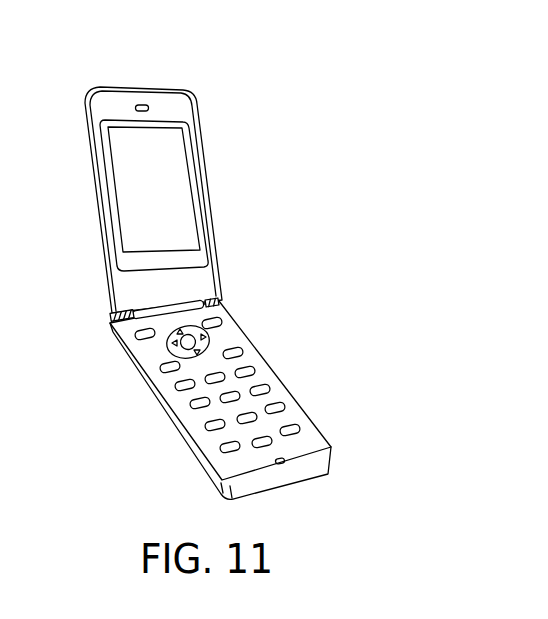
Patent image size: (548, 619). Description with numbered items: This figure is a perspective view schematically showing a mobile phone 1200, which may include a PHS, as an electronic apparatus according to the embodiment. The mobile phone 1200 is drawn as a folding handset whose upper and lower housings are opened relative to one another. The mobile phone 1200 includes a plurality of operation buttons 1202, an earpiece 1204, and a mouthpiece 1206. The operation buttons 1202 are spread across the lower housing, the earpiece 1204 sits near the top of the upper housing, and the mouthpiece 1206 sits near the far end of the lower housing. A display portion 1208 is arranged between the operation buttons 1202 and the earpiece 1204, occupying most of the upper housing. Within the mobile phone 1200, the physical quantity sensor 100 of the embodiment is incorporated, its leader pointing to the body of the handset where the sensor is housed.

The mobile phone 1200 is at (256, 251).
The physical quantity sensor 100 is at (268, 400).
The operation buttons 1202 is at (262, 389).
The earpiece 1204 is at (144, 104).
The mouthpiece 1206 is at (284, 460).
The display portion 1208 is at (178, 182).